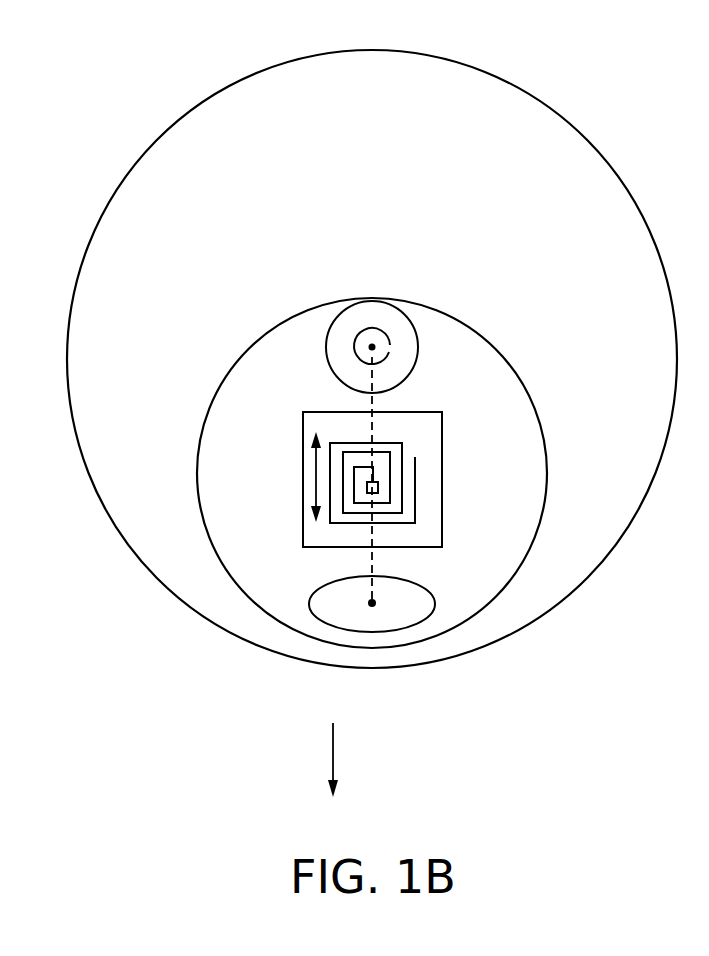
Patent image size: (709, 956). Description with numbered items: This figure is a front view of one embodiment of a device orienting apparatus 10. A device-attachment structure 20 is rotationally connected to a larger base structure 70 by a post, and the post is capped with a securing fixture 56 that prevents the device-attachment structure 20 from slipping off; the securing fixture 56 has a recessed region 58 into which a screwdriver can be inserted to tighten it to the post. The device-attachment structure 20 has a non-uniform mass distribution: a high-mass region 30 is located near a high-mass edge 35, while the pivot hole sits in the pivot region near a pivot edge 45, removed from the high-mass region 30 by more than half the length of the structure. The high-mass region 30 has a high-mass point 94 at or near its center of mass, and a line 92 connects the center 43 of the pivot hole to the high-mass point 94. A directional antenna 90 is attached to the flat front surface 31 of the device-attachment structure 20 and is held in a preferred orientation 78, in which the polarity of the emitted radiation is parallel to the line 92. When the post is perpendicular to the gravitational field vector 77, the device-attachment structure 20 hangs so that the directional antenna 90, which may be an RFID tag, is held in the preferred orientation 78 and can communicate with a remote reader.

The device orienting apparatus 10 is at (373, 443).
The device-attachment structure 20 is at (504, 358).
The high-mass region 30 is at (433, 613).
The front surface 31 is at (525, 450).
The high-mass edge 35 is at (268, 622).
The center of the pivot hole 43 is at (368, 348).
The pivot edge 45 is at (300, 298).
The securing fixture 56 is at (417, 338).
The recessed region 58 is at (388, 352).
The base structure 70 is at (642, 210).
The gravitational field vector 77 is at (333, 758).
The preferred orientation 78 is at (313, 473).
The directional antenna 90 is at (435, 515).
The line 92 is at (377, 565).
The high-mass point 94 is at (369, 606).